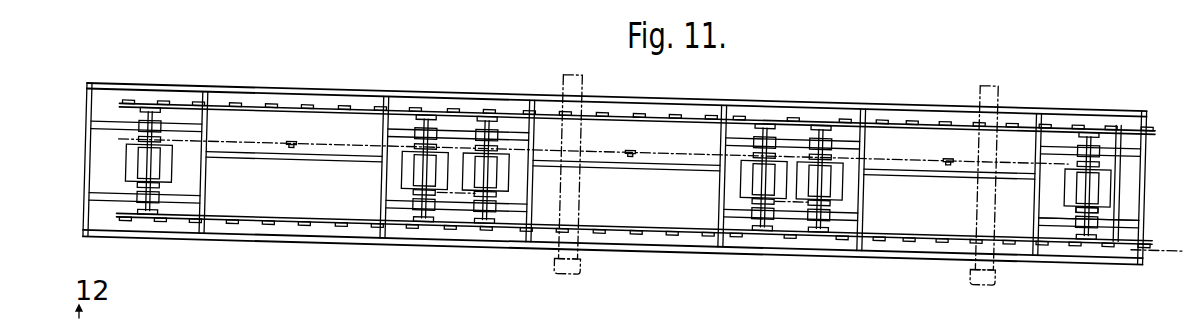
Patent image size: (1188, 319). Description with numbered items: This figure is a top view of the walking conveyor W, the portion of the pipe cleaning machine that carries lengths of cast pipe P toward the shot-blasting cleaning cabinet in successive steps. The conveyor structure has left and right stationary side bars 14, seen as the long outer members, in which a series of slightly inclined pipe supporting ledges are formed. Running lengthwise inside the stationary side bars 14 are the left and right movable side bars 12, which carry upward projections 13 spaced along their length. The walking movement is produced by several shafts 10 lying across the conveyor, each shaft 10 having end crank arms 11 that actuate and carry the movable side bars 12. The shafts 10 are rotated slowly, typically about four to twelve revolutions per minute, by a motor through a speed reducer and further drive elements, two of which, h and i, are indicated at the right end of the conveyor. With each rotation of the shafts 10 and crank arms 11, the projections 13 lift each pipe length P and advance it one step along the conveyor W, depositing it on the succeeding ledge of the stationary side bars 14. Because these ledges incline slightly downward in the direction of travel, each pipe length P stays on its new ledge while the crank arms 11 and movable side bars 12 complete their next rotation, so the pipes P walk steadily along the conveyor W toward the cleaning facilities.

The shafts 10 is at (147, 113).
The end crank arms 11 is at (162, 109).
The side bars 12 is at (650, 119).
The upward projections 13 is at (310, 103).
The stationary side bars 14 is at (192, 88).
The pipe length P is at (563, 84).
The walking conveyor W is at (683, 254).
The drive element h is at (1128, 212).
The drive element i is at (1075, 212).